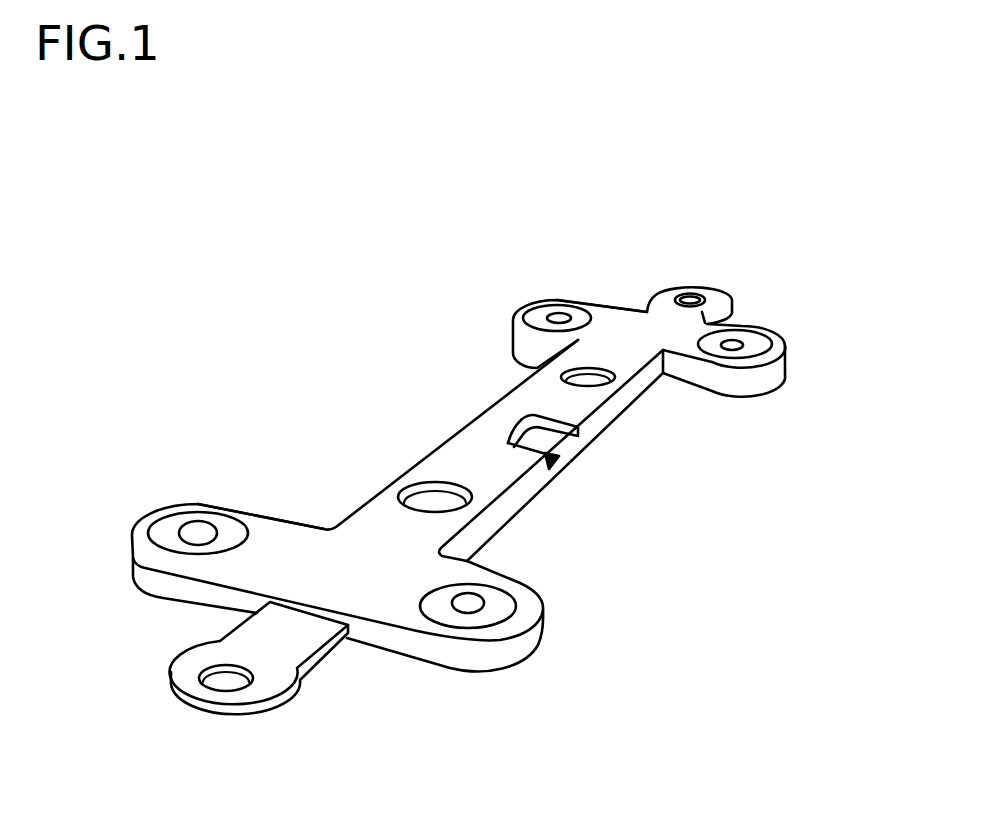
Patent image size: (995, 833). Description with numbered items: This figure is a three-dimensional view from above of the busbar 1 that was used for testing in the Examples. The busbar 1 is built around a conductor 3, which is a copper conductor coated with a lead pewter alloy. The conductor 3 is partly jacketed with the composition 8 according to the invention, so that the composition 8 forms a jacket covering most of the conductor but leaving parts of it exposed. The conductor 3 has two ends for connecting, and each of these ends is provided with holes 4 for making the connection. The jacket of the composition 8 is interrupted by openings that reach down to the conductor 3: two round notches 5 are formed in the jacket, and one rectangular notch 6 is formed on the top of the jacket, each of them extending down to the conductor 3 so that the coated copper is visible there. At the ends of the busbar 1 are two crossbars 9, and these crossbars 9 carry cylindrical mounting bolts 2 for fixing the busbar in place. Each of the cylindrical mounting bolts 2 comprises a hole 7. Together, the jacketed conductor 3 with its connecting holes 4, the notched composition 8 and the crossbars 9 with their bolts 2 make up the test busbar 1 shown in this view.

The busbar 1 is at (772, 272).
The cylindrical mounting bolts 2 is at (760, 342).
The conductor 3 is at (653, 298).
The holes 4 is at (690, 297).
The round notches 5 is at (562, 384).
The rectangular notch 6 is at (562, 445).
The hole 7 is at (740, 347).
The composition 8 is at (467, 458).
The crossbars 9 is at (277, 568).